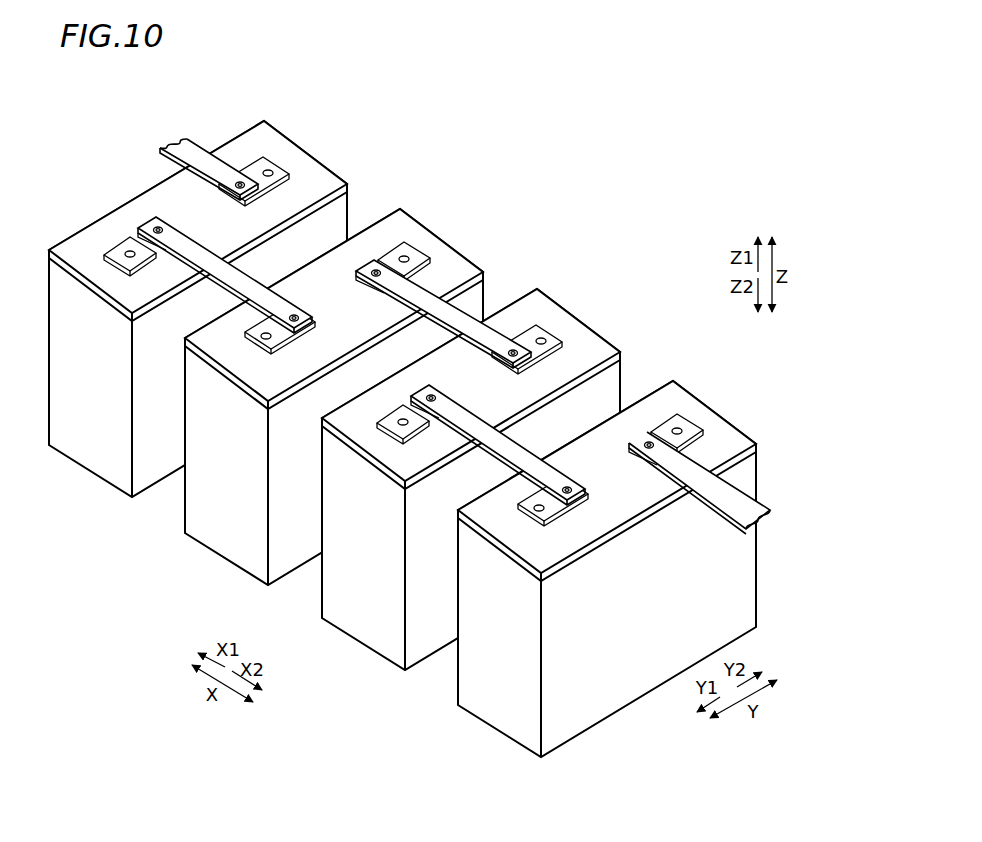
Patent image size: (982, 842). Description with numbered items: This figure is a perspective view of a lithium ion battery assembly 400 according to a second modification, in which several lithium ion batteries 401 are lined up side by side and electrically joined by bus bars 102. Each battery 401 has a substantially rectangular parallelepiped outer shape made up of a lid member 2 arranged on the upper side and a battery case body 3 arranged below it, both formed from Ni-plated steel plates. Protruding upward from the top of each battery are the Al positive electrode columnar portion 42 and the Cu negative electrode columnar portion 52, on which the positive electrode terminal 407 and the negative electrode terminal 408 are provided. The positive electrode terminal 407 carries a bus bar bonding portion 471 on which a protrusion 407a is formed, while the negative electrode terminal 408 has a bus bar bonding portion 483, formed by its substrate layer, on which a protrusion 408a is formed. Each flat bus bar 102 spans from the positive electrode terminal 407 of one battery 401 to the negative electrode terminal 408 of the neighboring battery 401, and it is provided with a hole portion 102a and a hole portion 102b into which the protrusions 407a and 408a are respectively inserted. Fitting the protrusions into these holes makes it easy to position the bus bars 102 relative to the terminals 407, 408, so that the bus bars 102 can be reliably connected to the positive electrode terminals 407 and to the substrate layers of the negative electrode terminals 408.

The lid member 2 is at (158, 196).
The battery case body 3 is at (70, 346).
The positive electrode columnar portion 42 is at (294, 178).
The negative electrode columnar portion 52 is at (126, 248).
The bus bar 102 is at (190, 152).
The hole portion 102a is at (243, 178).
The hole portion 102b is at (380, 266).
The battery module 400 is at (409, 438).
The lithium ion battery 401 is at (407, 443).
The positive electrode terminal 407 is at (292, 172).
The protrusion 407a is at (270, 172).
The negative electrode terminal 408 is at (118, 250).
The protrusion 408a is at (384, 262).
The bus bar bonding portion 471 is at (238, 180).
The bus bar bonding portion 483 is at (372, 268).